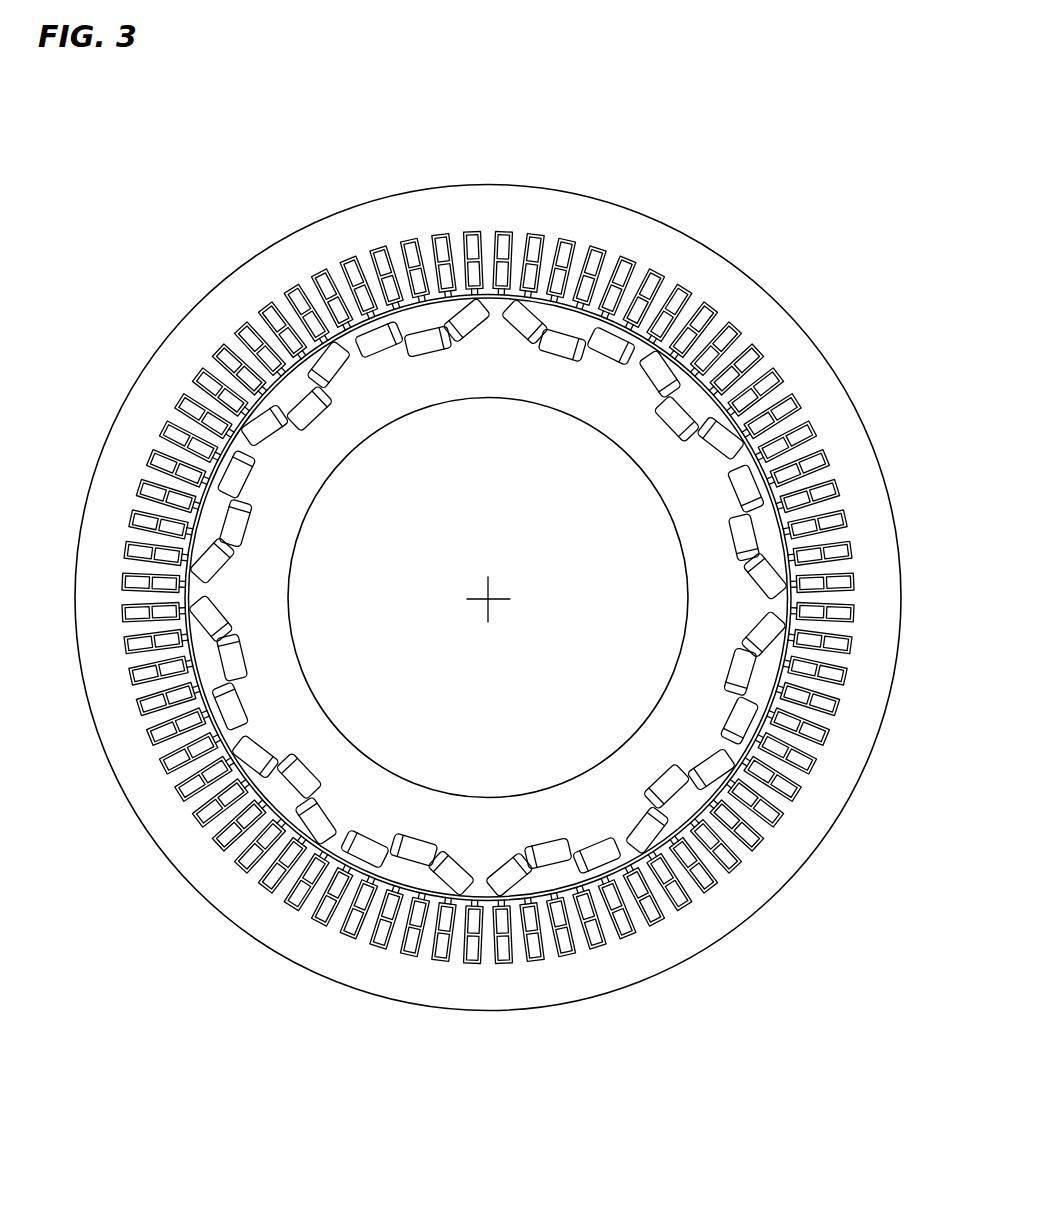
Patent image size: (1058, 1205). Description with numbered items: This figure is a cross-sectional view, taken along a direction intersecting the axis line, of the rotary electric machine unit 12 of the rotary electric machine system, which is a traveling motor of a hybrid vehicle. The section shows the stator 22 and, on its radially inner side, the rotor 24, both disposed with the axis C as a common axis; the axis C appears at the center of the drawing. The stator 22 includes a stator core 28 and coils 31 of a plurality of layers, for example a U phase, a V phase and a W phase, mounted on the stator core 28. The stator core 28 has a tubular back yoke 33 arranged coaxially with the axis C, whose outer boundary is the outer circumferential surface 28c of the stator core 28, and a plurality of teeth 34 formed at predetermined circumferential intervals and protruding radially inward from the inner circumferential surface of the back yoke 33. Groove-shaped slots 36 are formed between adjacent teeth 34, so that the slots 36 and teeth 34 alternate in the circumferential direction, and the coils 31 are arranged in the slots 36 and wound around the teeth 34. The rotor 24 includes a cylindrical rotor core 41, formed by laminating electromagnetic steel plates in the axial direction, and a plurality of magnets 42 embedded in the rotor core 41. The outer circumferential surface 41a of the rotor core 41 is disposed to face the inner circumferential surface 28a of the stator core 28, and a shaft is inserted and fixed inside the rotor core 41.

The rotary electric machine unit 12 is at (473, 593).
The stator 22 is at (467, 593).
The rotor 24 is at (510, 517).
The stator core 28 is at (467, 565).
The inner circumferential surface of the stator core 28a is at (685, 387).
The outer circumferential surface of the stator core 28c is at (152, 856).
The coils 31 is at (535, 241).
The back yoke 33 is at (482, 610).
The teeth 34 is at (455, 576).
The slots 36 is at (315, 873).
The rotor core 41 is at (551, 517).
The outer circumferential surface of the rotor core 41a is at (727, 398).
The magnets 42 is at (611, 346).
The axis C is at (485, 602).